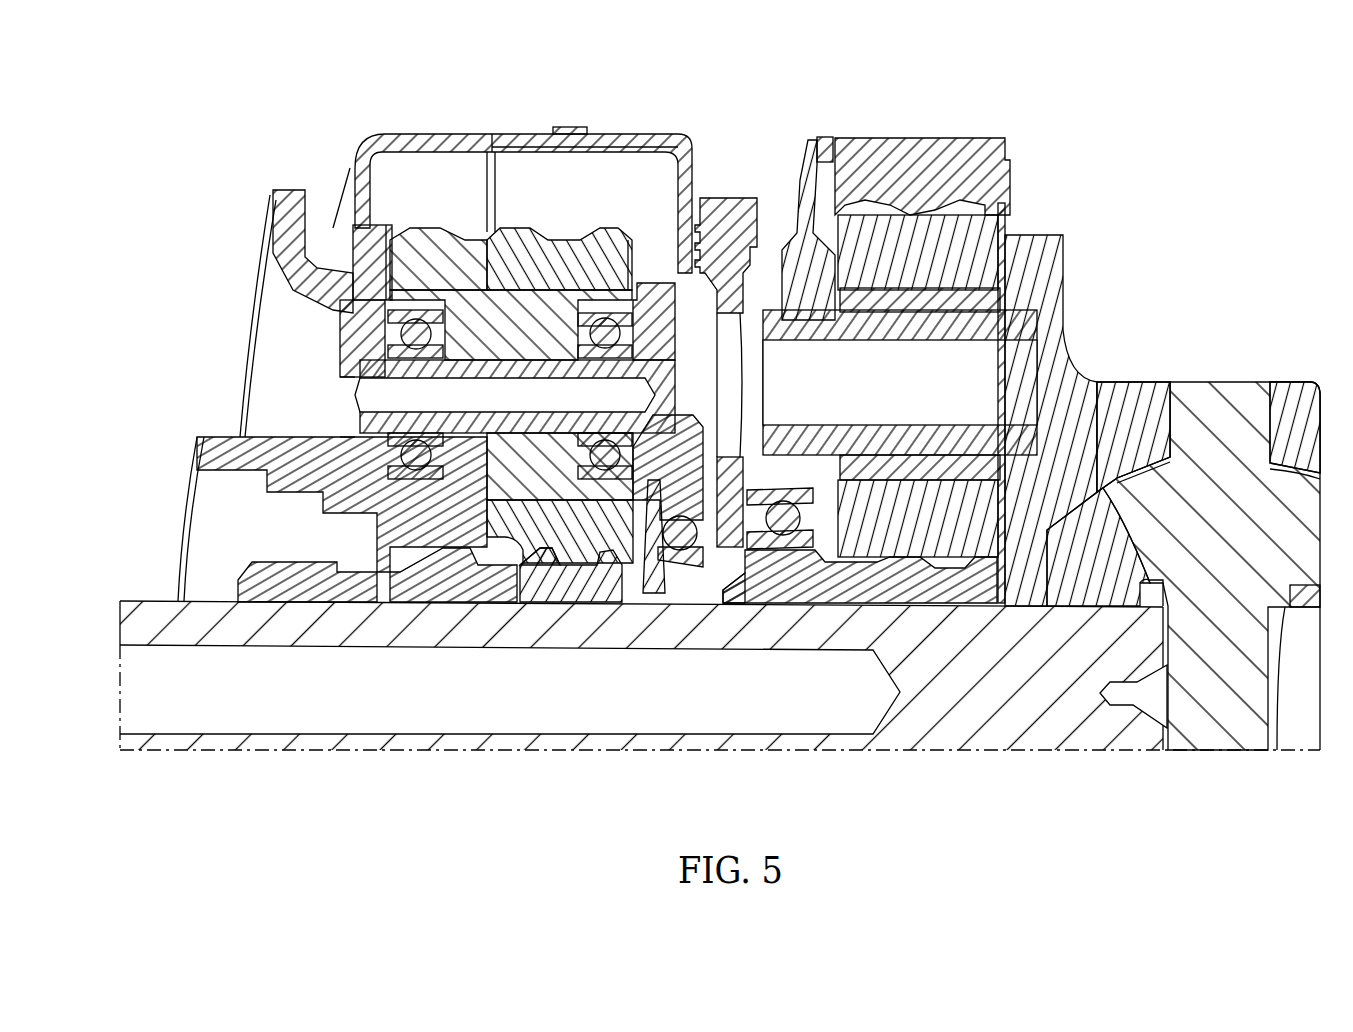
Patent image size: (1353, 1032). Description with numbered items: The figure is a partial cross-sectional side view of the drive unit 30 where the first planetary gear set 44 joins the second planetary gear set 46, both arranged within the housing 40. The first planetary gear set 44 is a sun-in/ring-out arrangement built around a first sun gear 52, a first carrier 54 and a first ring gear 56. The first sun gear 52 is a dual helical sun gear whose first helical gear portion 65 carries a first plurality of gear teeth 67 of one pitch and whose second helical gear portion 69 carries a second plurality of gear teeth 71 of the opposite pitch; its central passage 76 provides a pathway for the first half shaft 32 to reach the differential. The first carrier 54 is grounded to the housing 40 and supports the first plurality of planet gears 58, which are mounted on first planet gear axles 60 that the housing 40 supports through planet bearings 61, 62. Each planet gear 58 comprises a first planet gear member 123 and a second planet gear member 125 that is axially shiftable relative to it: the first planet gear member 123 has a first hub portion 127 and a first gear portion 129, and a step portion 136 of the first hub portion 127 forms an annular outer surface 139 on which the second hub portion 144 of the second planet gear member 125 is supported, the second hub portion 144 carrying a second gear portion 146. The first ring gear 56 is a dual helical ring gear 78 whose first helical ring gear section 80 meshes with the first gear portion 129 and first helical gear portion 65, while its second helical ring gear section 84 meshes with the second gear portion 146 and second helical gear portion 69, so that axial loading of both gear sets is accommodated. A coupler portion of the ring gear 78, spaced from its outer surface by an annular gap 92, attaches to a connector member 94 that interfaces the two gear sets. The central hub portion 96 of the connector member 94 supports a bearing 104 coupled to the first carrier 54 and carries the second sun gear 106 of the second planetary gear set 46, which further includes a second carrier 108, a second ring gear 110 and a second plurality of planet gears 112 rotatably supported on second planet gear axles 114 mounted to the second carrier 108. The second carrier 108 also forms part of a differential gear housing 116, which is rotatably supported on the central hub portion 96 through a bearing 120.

The drive unit 30 is at (187, 112).
The first half shaft 32 is at (150, 612).
The housing 40 is at (281, 240).
The first planetary gear set 44 is at (345, 146).
The second planetary gear set 46 is at (802, 136).
The first sun gear 52 is at (236, 553).
The first carrier 54 is at (680, 440).
The first ring gear 56 is at (499, 148).
The first plurality of planet gears 58 is at (365, 246).
The first planet gear axles 60 is at (357, 413).
The planet bearing 61 is at (385, 325).
The planet bearing 62 is at (633, 330).
The first helical gear portion 65 is at (427, 580).
The first plurality of gear teeth 67 is at (387, 507).
The second helical gear portion 69 is at (600, 593).
The second plurality of gear teeth 71 is at (547, 553).
The central passage 76 is at (295, 601).
The dual helical ring gear 78 is at (405, 158).
The first helical ring gear section 80 is at (462, 203).
The second helical ring gear section 84 is at (594, 203).
The annular gap 92 is at (445, 158).
The connector member 94 is at (737, 195).
The central hub portion 96 is at (745, 580).
The bearing 104 is at (673, 560).
The second sun gear 106 is at (900, 590).
The second carrier 108 is at (1103, 368).
The second ring gear 110 is at (925, 190).
The second plurality of planet gears 112 is at (980, 245).
The second planet gear axles 114 is at (905, 332).
The differential gear housing 116 is at (1155, 420).
The bearing 120 is at (790, 548).
The first planet gear member 123 is at (467, 297).
The second planet gear member 125 is at (542, 267).
The first hub portion 127 is at (515, 270).
The first gear portion 129 is at (390, 222).
The step portion 136 is at (523, 300).
The annular outer surface 139 is at (618, 225).
The second hub portion 144 is at (558, 245).
The second gear portion 146 is at (612, 255).